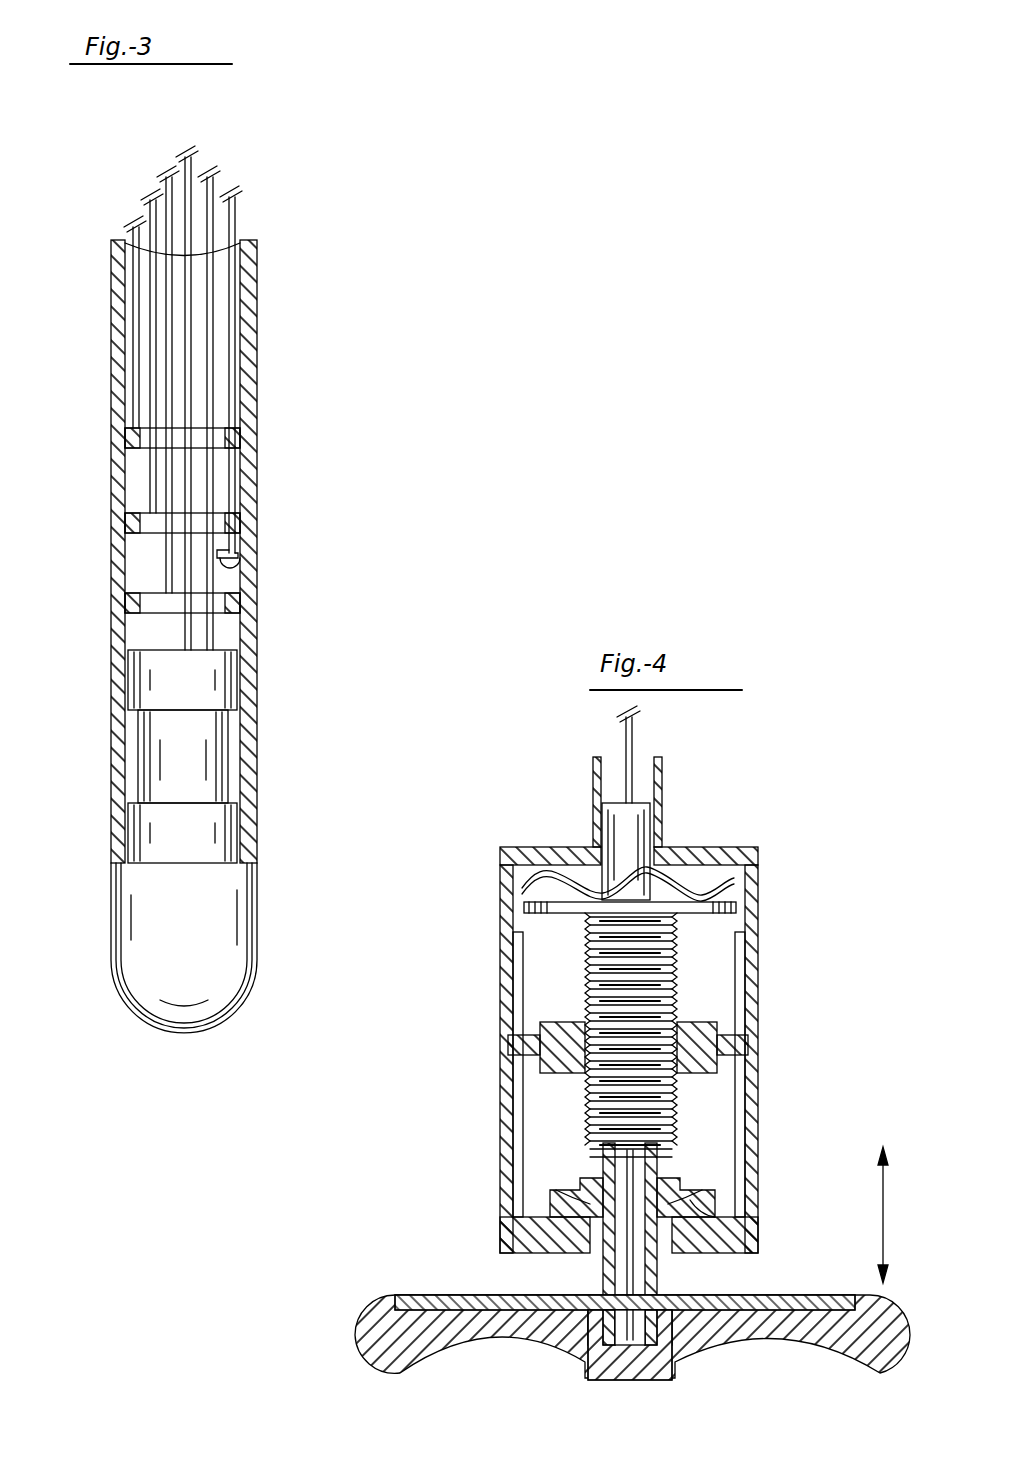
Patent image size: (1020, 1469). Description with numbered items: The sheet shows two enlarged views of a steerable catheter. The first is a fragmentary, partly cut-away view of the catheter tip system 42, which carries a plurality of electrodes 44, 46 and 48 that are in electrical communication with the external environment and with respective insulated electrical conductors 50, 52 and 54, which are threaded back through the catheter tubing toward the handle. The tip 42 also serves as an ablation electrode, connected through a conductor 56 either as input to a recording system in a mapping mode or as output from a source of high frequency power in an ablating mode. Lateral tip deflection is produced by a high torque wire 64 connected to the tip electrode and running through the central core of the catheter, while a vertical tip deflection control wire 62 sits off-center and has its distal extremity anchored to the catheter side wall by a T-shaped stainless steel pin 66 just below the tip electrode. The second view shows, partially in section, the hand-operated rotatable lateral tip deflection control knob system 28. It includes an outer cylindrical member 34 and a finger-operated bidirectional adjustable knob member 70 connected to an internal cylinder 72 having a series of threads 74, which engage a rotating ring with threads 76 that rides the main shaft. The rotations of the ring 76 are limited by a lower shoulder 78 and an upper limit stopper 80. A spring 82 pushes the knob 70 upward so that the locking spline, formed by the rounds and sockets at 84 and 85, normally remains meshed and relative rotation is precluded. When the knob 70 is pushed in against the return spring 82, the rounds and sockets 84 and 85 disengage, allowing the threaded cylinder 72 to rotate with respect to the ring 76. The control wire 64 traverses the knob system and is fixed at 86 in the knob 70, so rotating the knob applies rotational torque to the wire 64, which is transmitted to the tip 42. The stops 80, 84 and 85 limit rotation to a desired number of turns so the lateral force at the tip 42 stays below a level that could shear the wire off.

In FIG. 4, the lateral tip deflection control knob system 28 is at (803, 1115).
In FIG. 4, the outer cylindrical member 34 is at (770, 881).
In FIG. 3, the catheter tip system 42 is at (177, 1036).
In FIG. 3, the electrode 44 is at (258, 433).
In FIG. 3, the electrode 46 is at (258, 523).
In FIG. 3, the electrode 48 is at (258, 606).
In FIG. 3, the insulated electrical conductor 50 is at (130, 239).
In FIG. 3, the insulated electrical conductor 52 is at (148, 211).
In FIG. 3, the insulated electrical conductor 54 is at (163, 191).
In FIG. 3, the conductor 56 is at (214, 194).
In FIG. 3, the vertical tip deflection control wire 62 is at (237, 219).
In FIG. 3, the high torque wire 64 is at (193, 172).
In FIG. 4, the high torque wire 64 is at (612, 749).
In FIG. 3, the T-shaped stainless steel pin 66 is at (258, 566).
In FIG. 4, the knob member 70 is at (382, 1375).
In FIG. 4, the internal cylinder 72 is at (576, 1109).
In FIG. 4, the threads 74 is at (585, 1070).
In FIG. 4, the rotating ring with threads 76 is at (515, 994).
In FIG. 4, the lower shoulder 78 is at (690, 1182).
In FIG. 4, the upper limit stopper 80 is at (548, 918).
In FIG. 4, the spring 82 is at (522, 882).
In FIG. 4, the locking spline (rounds and sockets) 84 is at (572, 1196).
In FIG. 4, the locking spline (rounds and sockets) 85 is at (700, 1228).
In FIG. 4, the wire anchor point 86 is at (600, 1302).